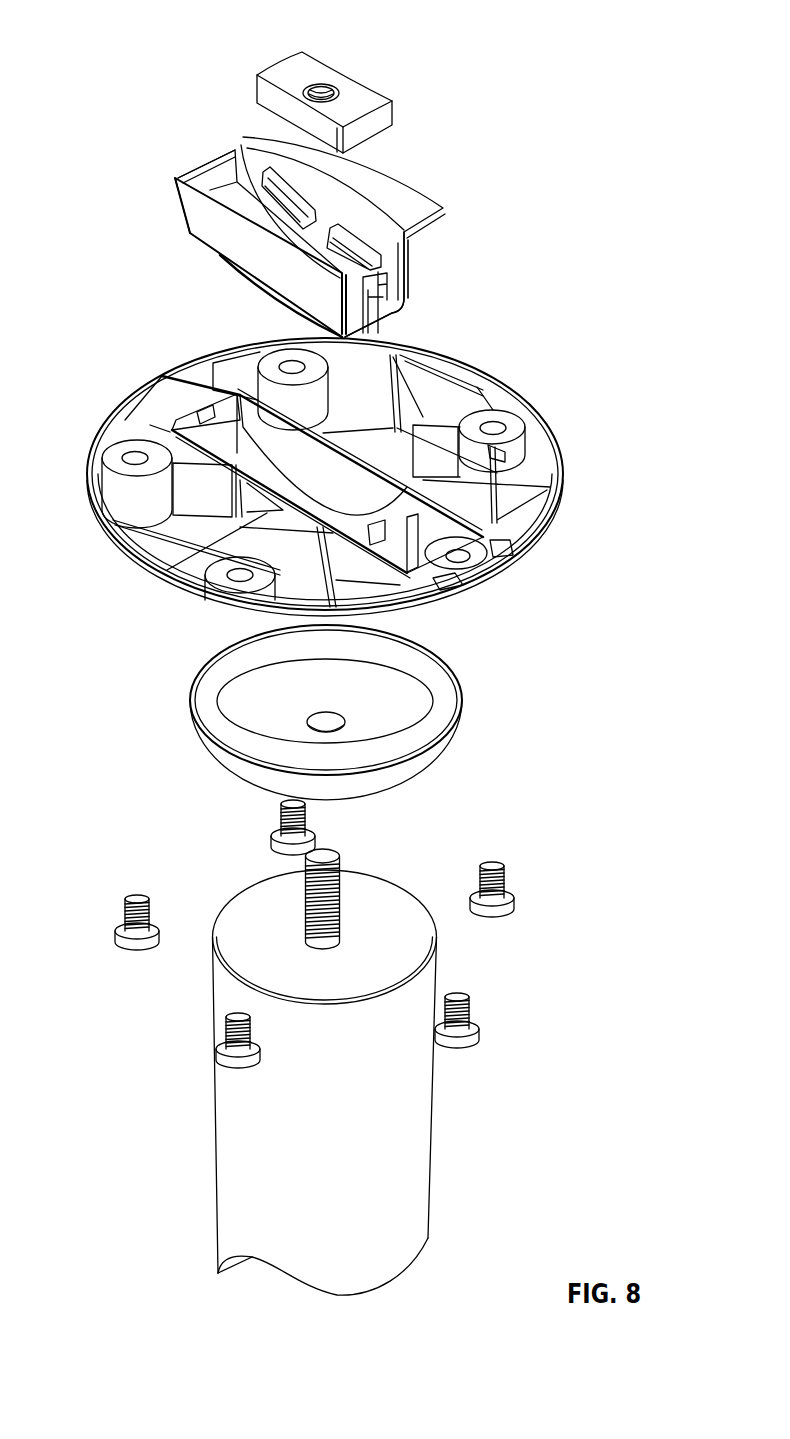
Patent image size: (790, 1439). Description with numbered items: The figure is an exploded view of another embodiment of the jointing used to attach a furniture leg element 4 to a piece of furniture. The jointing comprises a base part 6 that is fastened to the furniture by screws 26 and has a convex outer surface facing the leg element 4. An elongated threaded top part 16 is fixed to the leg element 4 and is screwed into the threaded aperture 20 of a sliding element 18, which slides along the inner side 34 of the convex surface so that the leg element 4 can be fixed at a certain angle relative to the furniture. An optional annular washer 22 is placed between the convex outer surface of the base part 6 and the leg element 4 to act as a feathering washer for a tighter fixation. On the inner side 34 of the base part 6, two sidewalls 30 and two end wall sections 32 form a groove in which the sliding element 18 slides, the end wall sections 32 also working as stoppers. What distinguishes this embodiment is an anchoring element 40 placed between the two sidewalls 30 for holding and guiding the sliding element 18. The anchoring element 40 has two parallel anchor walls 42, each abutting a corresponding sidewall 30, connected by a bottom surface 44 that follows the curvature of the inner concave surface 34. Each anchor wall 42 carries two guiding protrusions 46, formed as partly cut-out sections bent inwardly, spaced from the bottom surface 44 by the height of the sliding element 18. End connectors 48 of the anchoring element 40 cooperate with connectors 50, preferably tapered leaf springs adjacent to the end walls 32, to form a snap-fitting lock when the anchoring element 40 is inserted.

The furniture leg element 4 is at (228, 1148).
The base part 6 is at (314, 444).
The elongated threaded top part 16 is at (345, 880).
The sliding element 18 is at (318, 77).
The threaded aperture 20 is at (330, 88).
The annular washer 22 is at (222, 757).
The screws 26 is at (283, 822).
The sidewalls 30 is at (383, 500).
The end wall sections 32 is at (197, 420).
The inner side of the convex outer surface 34 is at (237, 452).
The anchoring element 40 is at (272, 205).
The anchor walls 42 is at (398, 263).
The bottom surface 44 is at (237, 187).
The guiding protrusions 46 is at (262, 188).
The end connectors 48 is at (192, 183).
The connectors 50 is at (207, 407).